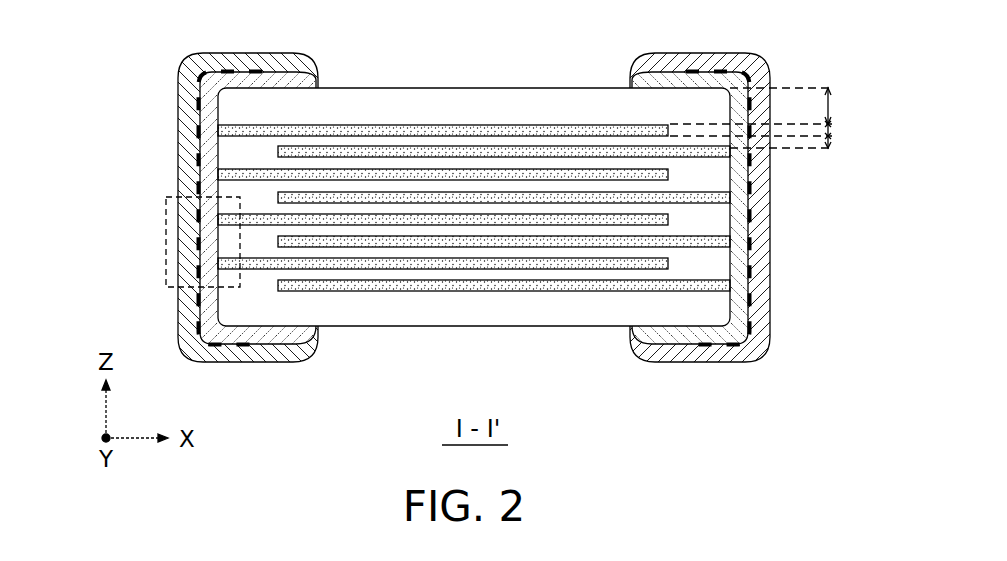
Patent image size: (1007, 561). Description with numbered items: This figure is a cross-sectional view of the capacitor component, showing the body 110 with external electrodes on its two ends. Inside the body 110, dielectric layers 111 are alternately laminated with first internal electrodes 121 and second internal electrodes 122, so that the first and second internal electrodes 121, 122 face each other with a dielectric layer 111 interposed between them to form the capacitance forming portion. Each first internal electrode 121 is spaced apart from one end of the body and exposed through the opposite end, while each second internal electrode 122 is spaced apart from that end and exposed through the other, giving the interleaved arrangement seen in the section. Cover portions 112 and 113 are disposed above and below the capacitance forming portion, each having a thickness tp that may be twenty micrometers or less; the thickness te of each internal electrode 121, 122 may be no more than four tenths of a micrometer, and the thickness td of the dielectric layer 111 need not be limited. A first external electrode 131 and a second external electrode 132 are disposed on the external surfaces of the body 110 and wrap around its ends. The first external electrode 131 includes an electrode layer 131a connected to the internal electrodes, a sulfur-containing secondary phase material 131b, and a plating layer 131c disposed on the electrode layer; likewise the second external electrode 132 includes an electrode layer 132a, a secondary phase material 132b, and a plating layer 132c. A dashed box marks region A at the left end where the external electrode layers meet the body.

The body 110 is at (400, 88).
The dielectric layer 111 is at (350, 167).
The cover portion 112 is at (490, 103).
The cover portion 113 is at (488, 303).
The first internal electrode 121 is at (548, 125).
The second internal electrode 122 is at (606, 150).
The first external electrode 131 is at (166, 207).
The electrode layer 131a is at (212, 140).
The secondary phase material 131b is at (192, 167).
The plating layer 131c is at (192, 202).
The second external electrode 132 is at (782, 207).
The electrode layer 132a is at (752, 218).
The secondary phase material 132b is at (752, 247).
The plating layer 132c is at (752, 276).
The enlarged region A is at (166, 262).
The thickness of cover portion tp is at (830, 105).
The thickness of internal electrode te is at (830, 129).
The thickness of dielectric layer td is at (830, 142).